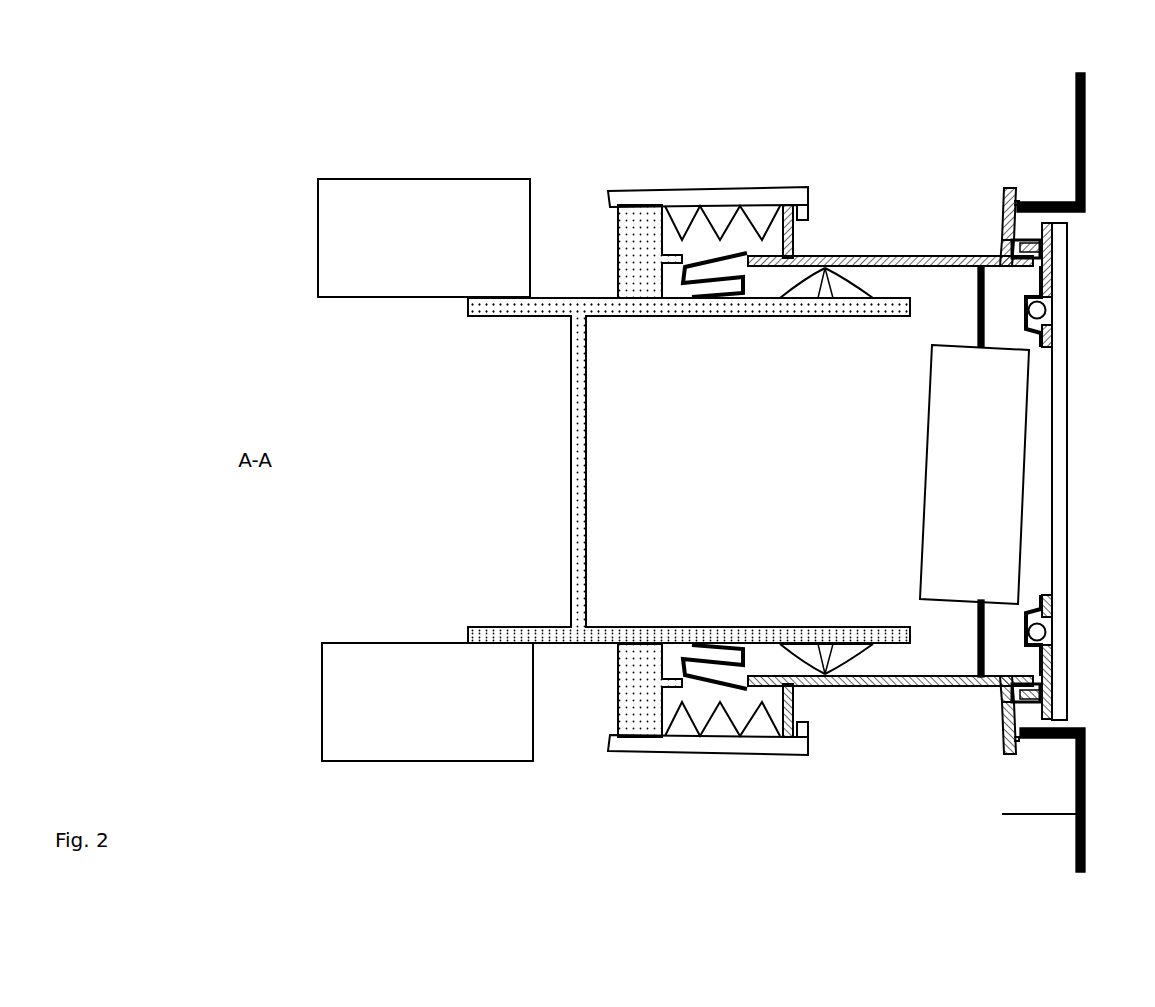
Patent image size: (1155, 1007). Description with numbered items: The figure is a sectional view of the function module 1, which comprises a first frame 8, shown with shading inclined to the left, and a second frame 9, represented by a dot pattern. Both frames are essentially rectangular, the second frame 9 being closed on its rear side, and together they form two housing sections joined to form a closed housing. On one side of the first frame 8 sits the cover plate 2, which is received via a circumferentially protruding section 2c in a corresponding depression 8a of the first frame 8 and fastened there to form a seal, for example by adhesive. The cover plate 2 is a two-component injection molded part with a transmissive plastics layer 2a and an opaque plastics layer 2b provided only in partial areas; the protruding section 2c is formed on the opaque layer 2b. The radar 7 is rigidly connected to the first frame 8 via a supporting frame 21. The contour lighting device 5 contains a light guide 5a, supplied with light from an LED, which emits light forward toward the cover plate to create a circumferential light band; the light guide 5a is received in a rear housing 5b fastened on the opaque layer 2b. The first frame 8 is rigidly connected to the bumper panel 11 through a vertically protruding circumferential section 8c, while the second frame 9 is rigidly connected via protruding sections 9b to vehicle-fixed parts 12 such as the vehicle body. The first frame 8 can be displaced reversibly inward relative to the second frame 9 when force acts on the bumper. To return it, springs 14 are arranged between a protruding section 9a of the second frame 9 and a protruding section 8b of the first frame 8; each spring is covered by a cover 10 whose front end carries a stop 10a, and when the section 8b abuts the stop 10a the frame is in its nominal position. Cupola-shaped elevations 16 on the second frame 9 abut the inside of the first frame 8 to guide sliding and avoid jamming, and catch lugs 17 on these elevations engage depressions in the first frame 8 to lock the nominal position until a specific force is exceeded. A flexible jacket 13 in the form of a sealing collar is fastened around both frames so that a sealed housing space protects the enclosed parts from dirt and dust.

The function module 1 is at (897, 92).
The cover plate 2 is at (1068, 262).
The transmissive plastics layer 2a is at (1068, 425).
The opaque plastics layer 2b is at (1052, 284).
The protruding section 2c is at (1018, 240).
The contour lighting device 5 is at (1024, 305).
The light guide 5a is at (1046, 311).
The rear housing 5b is at (1024, 328).
The radar 7 is at (924, 490).
The first frame 8 is at (868, 254).
The depression 8a is at (1002, 250).
The protruding section 8b is at (793, 242).
The circumferential section 8c is at (1004, 192).
The second frame 9 is at (568, 484).
The protruding section 9a is at (622, 255).
The protruding sections 9b is at (486, 317).
The cover 10 is at (748, 186).
The stop 10a is at (808, 195).
The bumper panel 11 is at (1085, 100).
The vehicle-fixed parts 12 is at (400, 186).
The flexible jacket 13 is at (712, 300).
The springs 14 is at (674, 213).
The cupola-shaped elevations 16 is at (846, 292).
The catch lugs 17 is at (820, 292).
The supporting frame 21 is at (978, 316).